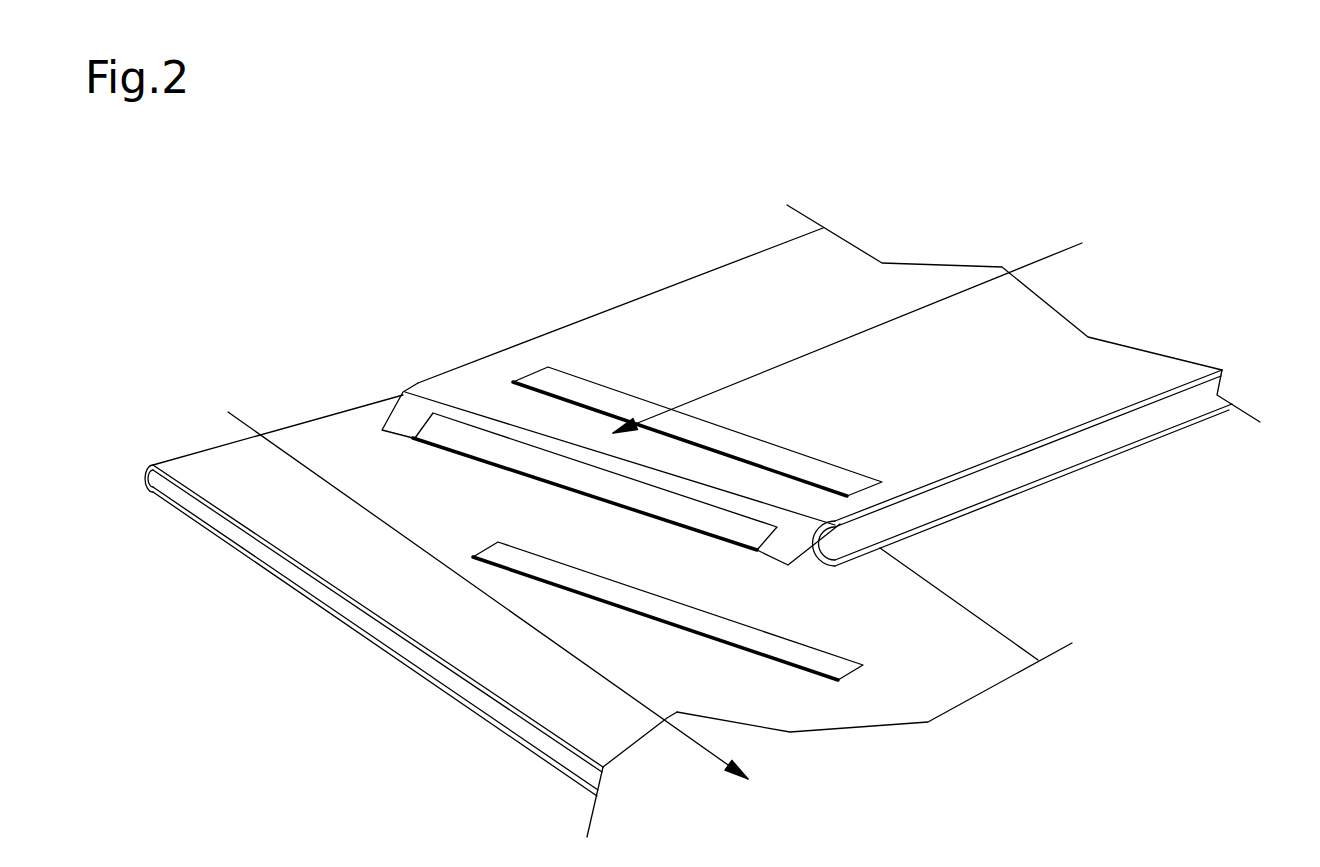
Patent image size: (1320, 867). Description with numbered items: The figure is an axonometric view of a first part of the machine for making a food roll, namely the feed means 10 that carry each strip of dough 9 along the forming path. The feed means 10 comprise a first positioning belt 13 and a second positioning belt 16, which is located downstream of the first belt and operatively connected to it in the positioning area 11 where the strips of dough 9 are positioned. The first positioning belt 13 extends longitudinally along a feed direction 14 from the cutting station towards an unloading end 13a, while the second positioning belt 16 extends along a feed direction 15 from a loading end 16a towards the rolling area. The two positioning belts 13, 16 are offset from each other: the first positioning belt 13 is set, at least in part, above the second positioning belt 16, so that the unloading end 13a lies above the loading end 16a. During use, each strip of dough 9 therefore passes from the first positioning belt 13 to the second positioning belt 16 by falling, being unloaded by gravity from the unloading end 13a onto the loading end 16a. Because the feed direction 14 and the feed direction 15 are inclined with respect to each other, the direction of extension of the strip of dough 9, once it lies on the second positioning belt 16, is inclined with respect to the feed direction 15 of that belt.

The strip of dough 9 is at (582, 392).
The feed means 10 is at (383, 366).
The positioning area 11 is at (1082, 593).
The first positioning belt 13 is at (1090, 384).
The unloading end 13a is at (850, 532).
The feed direction 14 is at (547, 642).
The feed direction 15 is at (1053, 256).
The second positioning belt 16 is at (382, 578).
The loading end 16a is at (470, 488).